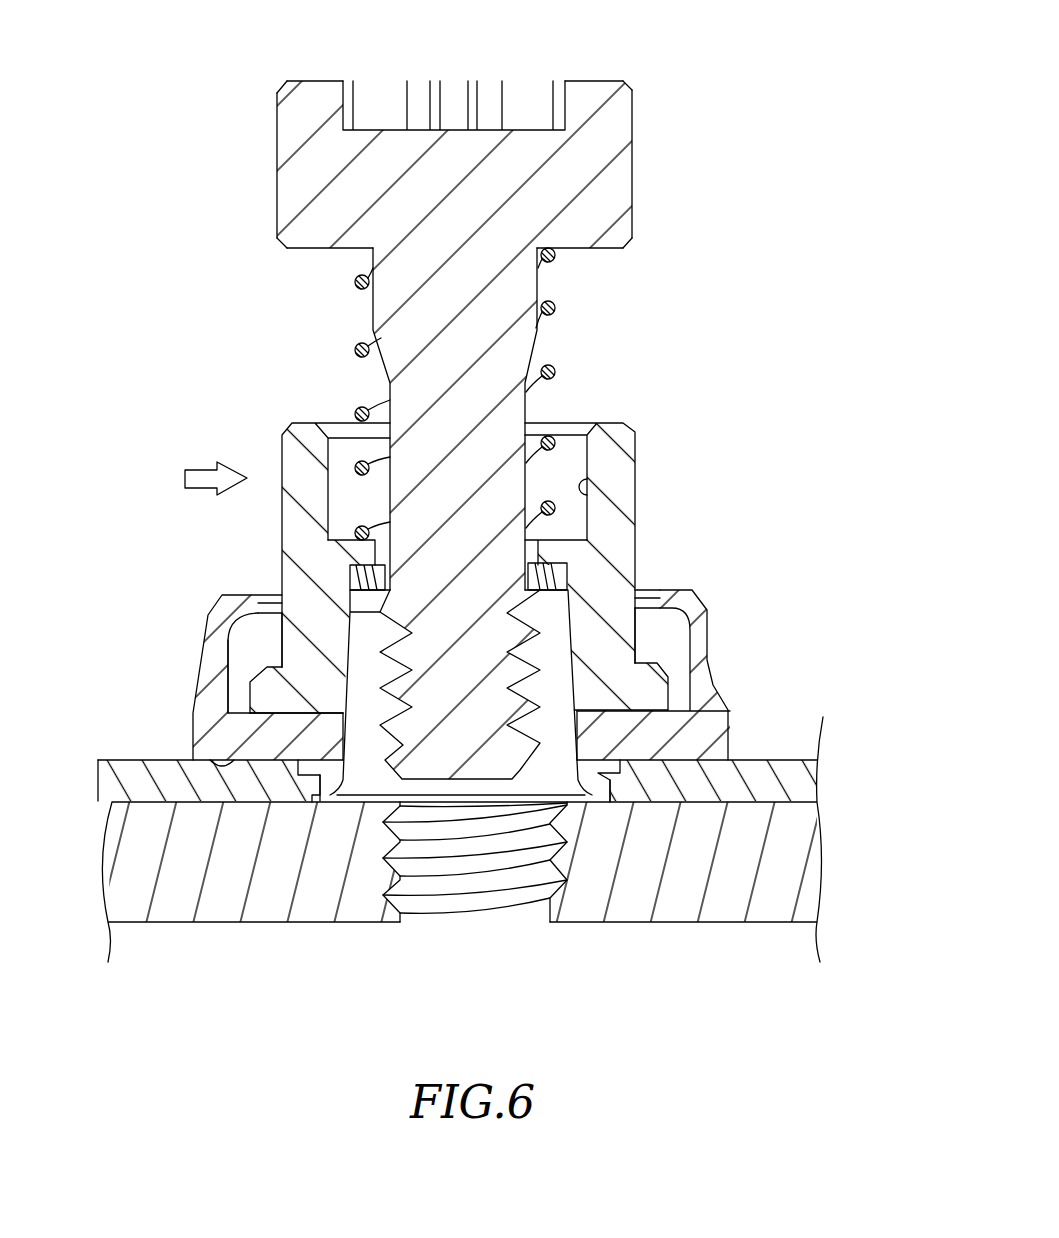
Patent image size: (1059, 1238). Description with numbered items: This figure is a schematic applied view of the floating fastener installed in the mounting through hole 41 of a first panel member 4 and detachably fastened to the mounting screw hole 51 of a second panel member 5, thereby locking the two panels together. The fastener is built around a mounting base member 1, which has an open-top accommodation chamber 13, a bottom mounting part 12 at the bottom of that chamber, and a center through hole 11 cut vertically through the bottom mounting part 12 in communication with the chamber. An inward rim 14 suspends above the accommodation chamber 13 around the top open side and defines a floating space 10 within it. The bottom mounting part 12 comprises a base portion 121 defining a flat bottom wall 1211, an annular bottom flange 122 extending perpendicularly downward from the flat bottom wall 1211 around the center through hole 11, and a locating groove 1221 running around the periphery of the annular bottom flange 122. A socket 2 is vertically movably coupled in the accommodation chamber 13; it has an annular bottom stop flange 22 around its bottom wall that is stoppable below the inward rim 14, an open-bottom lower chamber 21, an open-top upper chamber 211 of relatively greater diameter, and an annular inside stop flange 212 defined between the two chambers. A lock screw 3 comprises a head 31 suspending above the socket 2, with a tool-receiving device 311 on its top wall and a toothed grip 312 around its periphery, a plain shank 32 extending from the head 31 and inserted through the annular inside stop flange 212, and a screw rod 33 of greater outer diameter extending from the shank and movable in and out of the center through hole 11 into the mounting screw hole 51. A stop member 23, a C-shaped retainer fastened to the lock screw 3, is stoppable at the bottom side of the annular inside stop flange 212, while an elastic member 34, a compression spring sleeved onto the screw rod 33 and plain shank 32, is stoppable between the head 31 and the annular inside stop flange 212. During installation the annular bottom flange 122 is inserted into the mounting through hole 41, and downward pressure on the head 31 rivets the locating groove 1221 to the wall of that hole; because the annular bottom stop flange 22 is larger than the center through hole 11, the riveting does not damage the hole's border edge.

The mounting base member 1 is at (213, 703).
The floating space 10 is at (258, 653).
The center through hole 11 is at (341, 743).
The bottom mounting part 12 is at (108, 711).
The base portion 121 is at (222, 735).
The flat bottom wall 1211 is at (233, 763).
The annular bottom flange 122 is at (330, 770).
The locating groove 1221 is at (303, 775).
The open-top accommodation chamber 13 is at (232, 673).
The inward rim 14 is at (240, 600).
The socket 2 is at (622, 470).
The open-bottom lower chamber 21 is at (558, 613).
The open-top upper chamber 211 is at (588, 488).
The annular inside stop flange 212 is at (547, 561).
The annular bottom stop flange 22 is at (655, 697).
The stop member 23 is at (370, 582).
The lock screw 3 is at (573, 38).
The head 31 is at (594, 198).
The tool-receiving device 311 is at (543, 110).
The toothed grip 312 is at (626, 146).
The plain shank 32 is at (398, 400).
The screw rod 33 is at (448, 745).
The elastic member 34 is at (355, 349).
The first panel member 4 is at (660, 780).
The mounting through hole 41 is at (603, 793).
The second panel member 5 is at (628, 892).
The mounting screw hole 51 is at (527, 890).